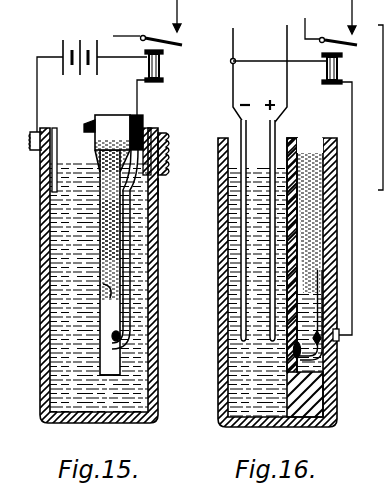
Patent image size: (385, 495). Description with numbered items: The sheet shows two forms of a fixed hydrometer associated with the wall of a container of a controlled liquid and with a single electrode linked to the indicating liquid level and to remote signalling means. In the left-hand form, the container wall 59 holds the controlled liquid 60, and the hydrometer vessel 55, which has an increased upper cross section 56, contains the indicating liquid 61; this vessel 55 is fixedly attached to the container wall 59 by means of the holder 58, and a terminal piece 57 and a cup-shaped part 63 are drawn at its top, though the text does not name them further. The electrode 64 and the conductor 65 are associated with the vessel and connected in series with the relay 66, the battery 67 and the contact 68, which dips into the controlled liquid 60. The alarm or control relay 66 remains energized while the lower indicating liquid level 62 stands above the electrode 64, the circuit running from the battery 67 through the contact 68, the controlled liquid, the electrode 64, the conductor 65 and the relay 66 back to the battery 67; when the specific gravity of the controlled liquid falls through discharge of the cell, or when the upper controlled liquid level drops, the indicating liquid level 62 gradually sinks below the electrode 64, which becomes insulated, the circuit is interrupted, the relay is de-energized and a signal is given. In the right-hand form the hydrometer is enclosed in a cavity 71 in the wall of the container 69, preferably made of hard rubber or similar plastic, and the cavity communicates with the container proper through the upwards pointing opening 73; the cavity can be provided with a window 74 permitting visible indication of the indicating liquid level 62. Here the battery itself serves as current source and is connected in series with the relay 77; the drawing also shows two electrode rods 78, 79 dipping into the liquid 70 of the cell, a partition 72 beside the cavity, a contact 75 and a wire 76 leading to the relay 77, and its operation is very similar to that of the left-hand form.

In FIG. 15, the hydrometer vessel 55 is at (103, 197).
In FIG. 15, the increased upper cross section 56 is at (97, 155).
In FIG. 15, the terminal nut 57 is at (92, 124).
In FIG. 15, the holder 58 is at (171, 134).
In FIG. 15, the container wall 59 is at (160, 185).
In FIG. 15, the controlled liquid 60 is at (60, 318).
In FIG. 16, the controlled liquid 60 is at (240, 365).
In FIG. 15, the indicating liquid 61 is at (102, 249).
In FIG. 16, the indicating liquid 61 is at (322, 185).
In FIG. 15, the indicating liquid level 62 is at (103, 289).
In FIG. 16, the indicating liquid level 62 is at (323, 289).
In FIG. 15, the cup 63 is at (112, 143).
In FIG. 15, the electrode 64 is at (104, 338).
In FIG. 15, the conductor 65 is at (143, 258).
In FIG. 15, the relay 66 is at (163, 70).
In FIG. 15, the battery 67 is at (65, 48).
In FIG. 15, the contact 68 is at (40, 127).
In FIG. 16, the container 69 is at (223, 393).
In FIG. 16, the electrolyte 70 is at (252, 145).
In FIG. 16, the cavity 71 is at (306, 142).
In FIG. 16, the partition 72 is at (335, 208).
In FIG. 16, the upwards pointing opening 73 is at (292, 360).
In FIG. 16, the window 74 is at (325, 325).
In FIG. 16, the contact 75 is at (340, 334).
In FIG. 16, the wire 76 is at (352, 107).
In FIG. 16, the relay 77 is at (341, 70).
In FIG. 16, the negative electrode 78 is at (241, 128).
In FIG. 16, the positive electrode 79 is at (277, 130).